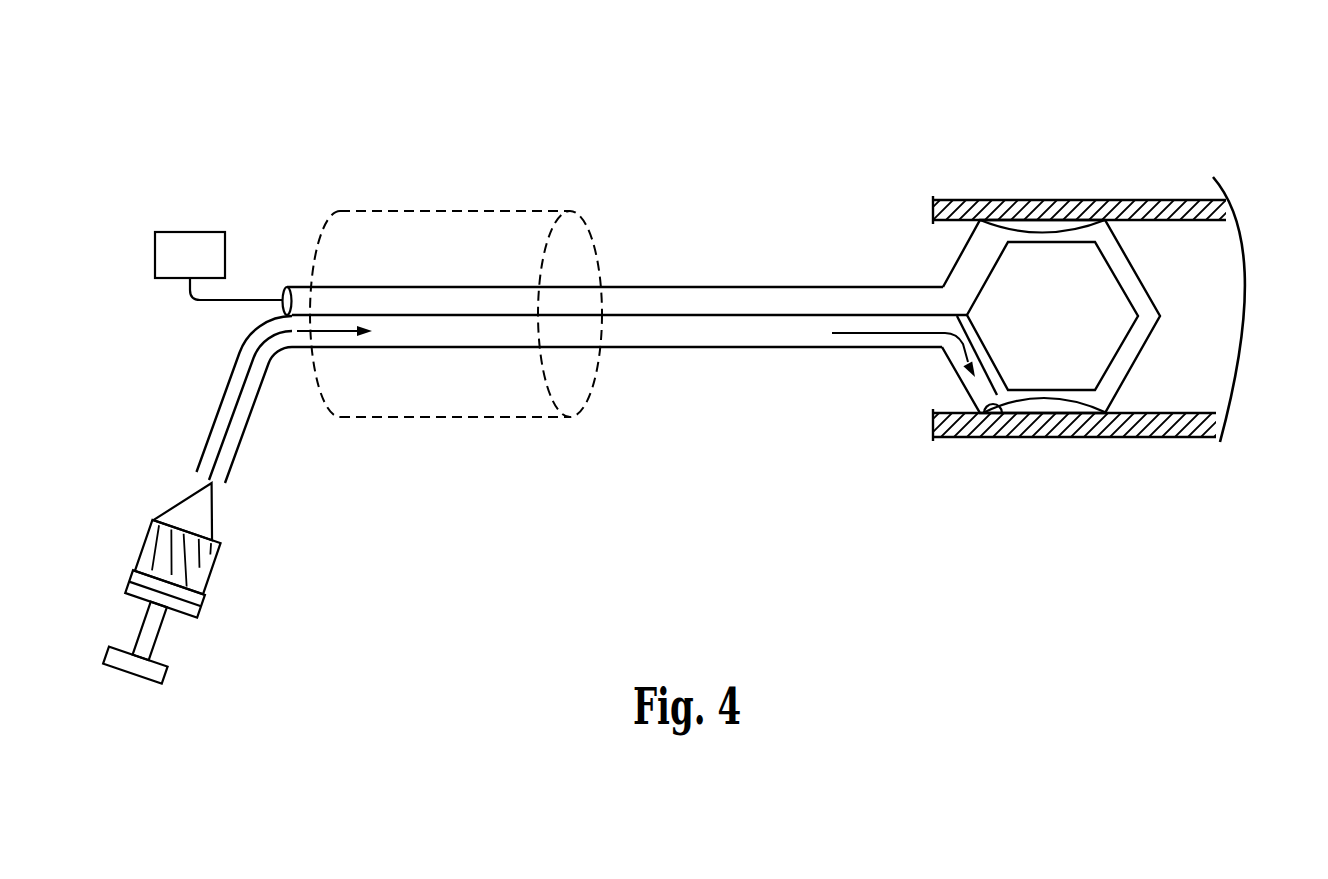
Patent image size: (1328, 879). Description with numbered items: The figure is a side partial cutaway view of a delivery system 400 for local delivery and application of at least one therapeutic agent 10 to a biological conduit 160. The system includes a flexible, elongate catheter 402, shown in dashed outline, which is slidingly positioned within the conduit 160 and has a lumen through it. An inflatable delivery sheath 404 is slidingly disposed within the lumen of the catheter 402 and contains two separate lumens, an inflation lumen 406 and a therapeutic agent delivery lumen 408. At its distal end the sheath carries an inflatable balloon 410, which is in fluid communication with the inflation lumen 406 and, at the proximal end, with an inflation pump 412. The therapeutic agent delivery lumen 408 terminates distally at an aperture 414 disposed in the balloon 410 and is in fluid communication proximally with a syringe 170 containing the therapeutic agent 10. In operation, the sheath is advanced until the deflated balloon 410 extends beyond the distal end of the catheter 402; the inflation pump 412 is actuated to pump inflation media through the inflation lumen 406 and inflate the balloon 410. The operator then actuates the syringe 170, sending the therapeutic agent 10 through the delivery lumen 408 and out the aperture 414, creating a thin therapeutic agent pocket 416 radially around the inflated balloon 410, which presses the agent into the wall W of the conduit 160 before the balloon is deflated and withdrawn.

The delivery system 400 is at (968, 90).
The inflation pump 412 is at (182, 232).
The catheter 402 is at (433, 211).
The inflatable delivery sheath 404 is at (673, 287).
The inflation lumen 406 is at (768, 300).
The therapeutic agent delivery lumen 408 is at (758, 332).
The inflatable balloon 410 is at (1130, 247).
The therapeutic agent pocket 416 is at (1038, 230).
The aperture 414 is at (1000, 403).
The wall W is at (1158, 427).
The biological conduit 160 is at (1205, 332).
The therapeutic agent 10 is at (200, 562).
The syringe 170 is at (207, 592).